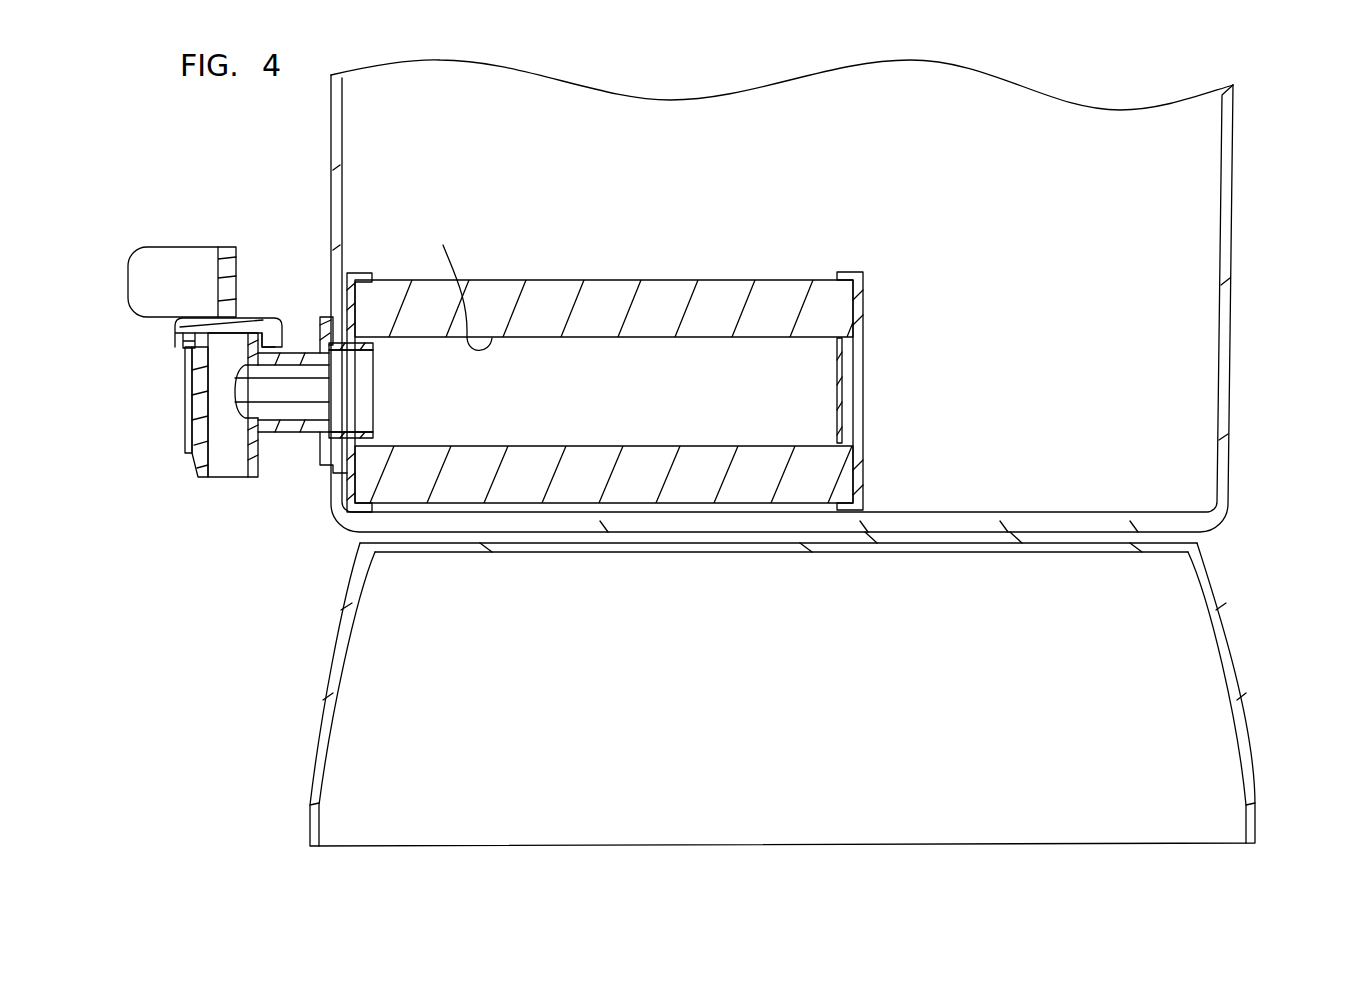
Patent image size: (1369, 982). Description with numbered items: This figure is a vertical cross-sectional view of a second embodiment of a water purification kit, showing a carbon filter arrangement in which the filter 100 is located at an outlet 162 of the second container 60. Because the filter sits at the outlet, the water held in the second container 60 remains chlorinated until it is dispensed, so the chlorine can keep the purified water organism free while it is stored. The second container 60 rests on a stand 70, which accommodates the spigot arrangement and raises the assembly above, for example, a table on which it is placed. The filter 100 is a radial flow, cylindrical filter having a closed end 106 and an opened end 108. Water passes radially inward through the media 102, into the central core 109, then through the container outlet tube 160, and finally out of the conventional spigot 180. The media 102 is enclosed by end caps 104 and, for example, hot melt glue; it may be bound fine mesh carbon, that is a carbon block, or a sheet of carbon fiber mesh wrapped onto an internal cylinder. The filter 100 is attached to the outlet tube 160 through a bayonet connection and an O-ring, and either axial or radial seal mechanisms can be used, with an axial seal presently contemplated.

The second container 60 is at (1236, 204).
The stand 70 is at (1240, 650).
The filter 100 is at (615, 380).
The media 102 is at (603, 278).
The end caps 104 is at (350, 282).
The closed end 106 is at (865, 410).
The opened end 108 is at (345, 322).
The central core 109 is at (459, 284).
The outlet tube 160 is at (355, 440).
The outlet 162 is at (368, 348).
The spigot 180 is at (182, 379).